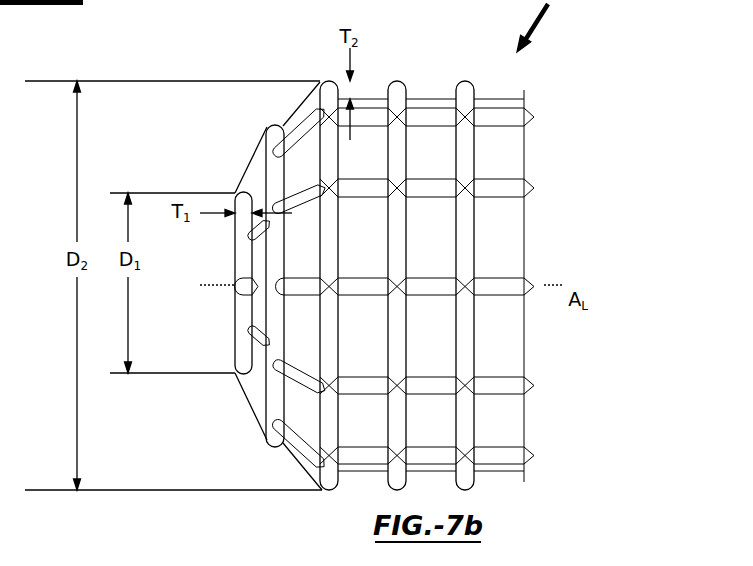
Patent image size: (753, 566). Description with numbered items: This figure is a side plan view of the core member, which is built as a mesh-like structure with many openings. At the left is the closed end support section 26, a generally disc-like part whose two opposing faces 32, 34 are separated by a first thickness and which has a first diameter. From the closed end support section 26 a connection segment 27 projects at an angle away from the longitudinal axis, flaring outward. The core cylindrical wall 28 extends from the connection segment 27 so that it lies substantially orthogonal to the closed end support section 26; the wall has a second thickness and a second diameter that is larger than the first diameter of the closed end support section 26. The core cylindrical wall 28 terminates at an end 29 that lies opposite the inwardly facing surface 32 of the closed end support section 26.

The closed end support section 26 is at (233, 361).
The connection segment 27 is at (252, 430).
The core cylindrical wall 28 is at (461, 72).
The end 29 is at (545, 183).
The inwardly facing surface 32 is at (250, 300).
The opposing face 34 is at (235, 315).